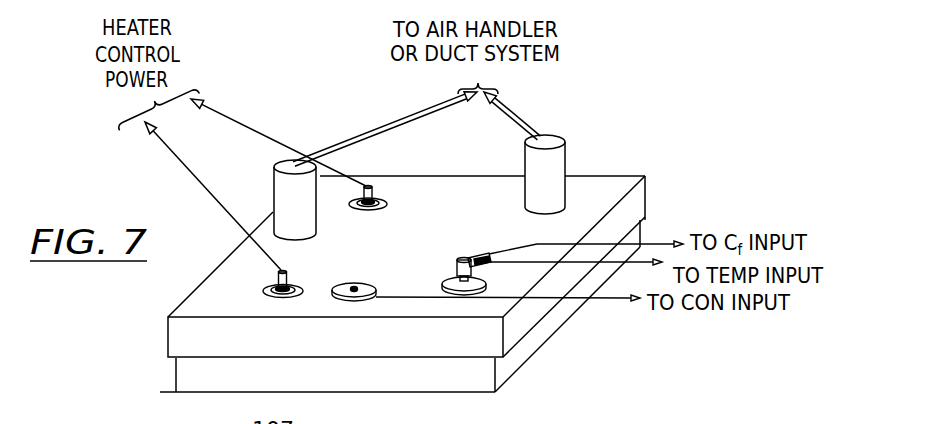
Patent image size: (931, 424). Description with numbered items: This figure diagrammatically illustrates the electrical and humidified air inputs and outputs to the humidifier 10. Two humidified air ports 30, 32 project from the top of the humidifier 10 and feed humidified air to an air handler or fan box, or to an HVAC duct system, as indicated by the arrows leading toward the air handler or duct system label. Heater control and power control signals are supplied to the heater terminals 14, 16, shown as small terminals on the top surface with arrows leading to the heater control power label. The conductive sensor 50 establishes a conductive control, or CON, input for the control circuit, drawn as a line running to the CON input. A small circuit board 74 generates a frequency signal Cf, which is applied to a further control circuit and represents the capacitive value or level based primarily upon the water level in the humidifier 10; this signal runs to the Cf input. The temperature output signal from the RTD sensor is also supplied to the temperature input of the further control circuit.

The humidifier 10 is at (654, 228).
The heater terminal 14 is at (290, 280).
The heater terminal 16 is at (375, 194).
The humidified air port 30 is at (273, 182).
The humidified air port 32 is at (567, 154).
The conductive sensor 50 is at (357, 282).
The small circuit board 74 is at (476, 256).